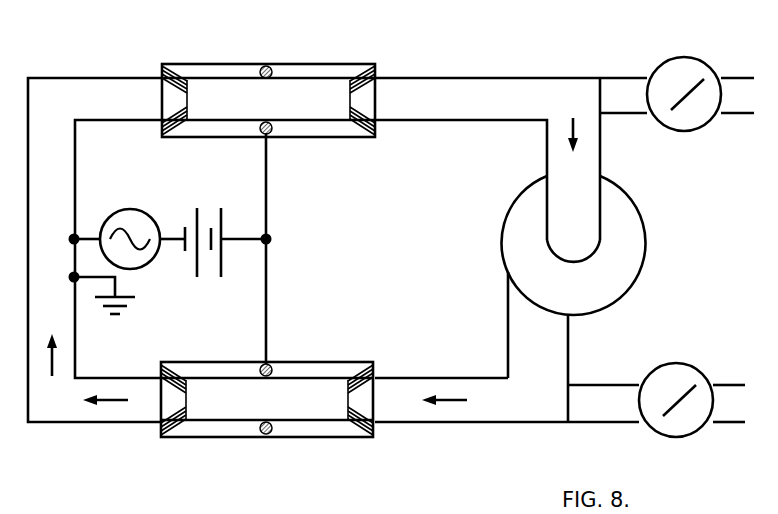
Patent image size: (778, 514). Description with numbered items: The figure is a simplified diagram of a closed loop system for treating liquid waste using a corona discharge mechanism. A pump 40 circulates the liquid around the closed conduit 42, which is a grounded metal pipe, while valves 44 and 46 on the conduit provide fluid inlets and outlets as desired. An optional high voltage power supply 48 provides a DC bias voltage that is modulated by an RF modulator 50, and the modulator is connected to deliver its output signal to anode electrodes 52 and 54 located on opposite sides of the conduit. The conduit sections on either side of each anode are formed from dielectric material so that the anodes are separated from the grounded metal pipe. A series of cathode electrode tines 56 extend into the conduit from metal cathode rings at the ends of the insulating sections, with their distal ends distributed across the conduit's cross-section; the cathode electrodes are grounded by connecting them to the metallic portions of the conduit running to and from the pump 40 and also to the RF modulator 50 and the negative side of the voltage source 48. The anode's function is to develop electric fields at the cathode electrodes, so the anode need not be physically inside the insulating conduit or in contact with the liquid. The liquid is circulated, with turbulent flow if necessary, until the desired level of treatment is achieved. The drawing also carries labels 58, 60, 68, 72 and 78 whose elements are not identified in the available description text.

The pump 40 is at (646, 258).
The closed conduit 42 is at (445, 76).
The valve 44 is at (660, 62).
The valve 46 is at (658, 364).
The high voltage power supply 48 is at (221, 210).
The RF modulator 50 is at (147, 208).
The anode electrode 52 is at (266, 64).
The anode electrode 54 is at (266, 436).
The cathode electrode tines 56 is at (196, 98).
The electrode 58 is at (90, 513).
The electrode 60 is at (443, 513).
The tube 68 is at (278, 513).
The tube 72 is at (207, 513).
The insulator 78 is at (140, 513).